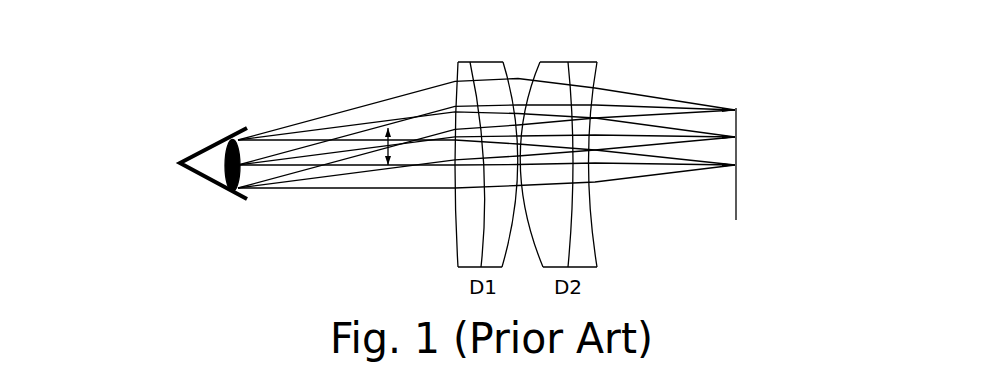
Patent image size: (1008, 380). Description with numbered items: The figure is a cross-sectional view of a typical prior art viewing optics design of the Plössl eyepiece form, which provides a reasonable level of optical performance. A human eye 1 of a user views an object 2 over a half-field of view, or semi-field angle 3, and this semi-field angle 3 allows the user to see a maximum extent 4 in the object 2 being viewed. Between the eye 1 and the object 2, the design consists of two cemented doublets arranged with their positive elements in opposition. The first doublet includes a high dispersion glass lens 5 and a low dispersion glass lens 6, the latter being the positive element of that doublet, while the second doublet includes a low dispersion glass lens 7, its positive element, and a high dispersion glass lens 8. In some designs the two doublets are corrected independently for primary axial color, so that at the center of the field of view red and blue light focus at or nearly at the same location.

The human eye 1 is at (223, 133).
The object 2 is at (738, 202).
The semi-field angle 3 is at (382, 122).
The maximum extent 4 is at (740, 102).
The high dispersion glass lens 5 is at (462, 82).
The low dispersion glass lens 6 is at (495, 88).
The low dispersion glass lens 7 is at (552, 70).
The high dispersion glass lens 8 is at (577, 70).